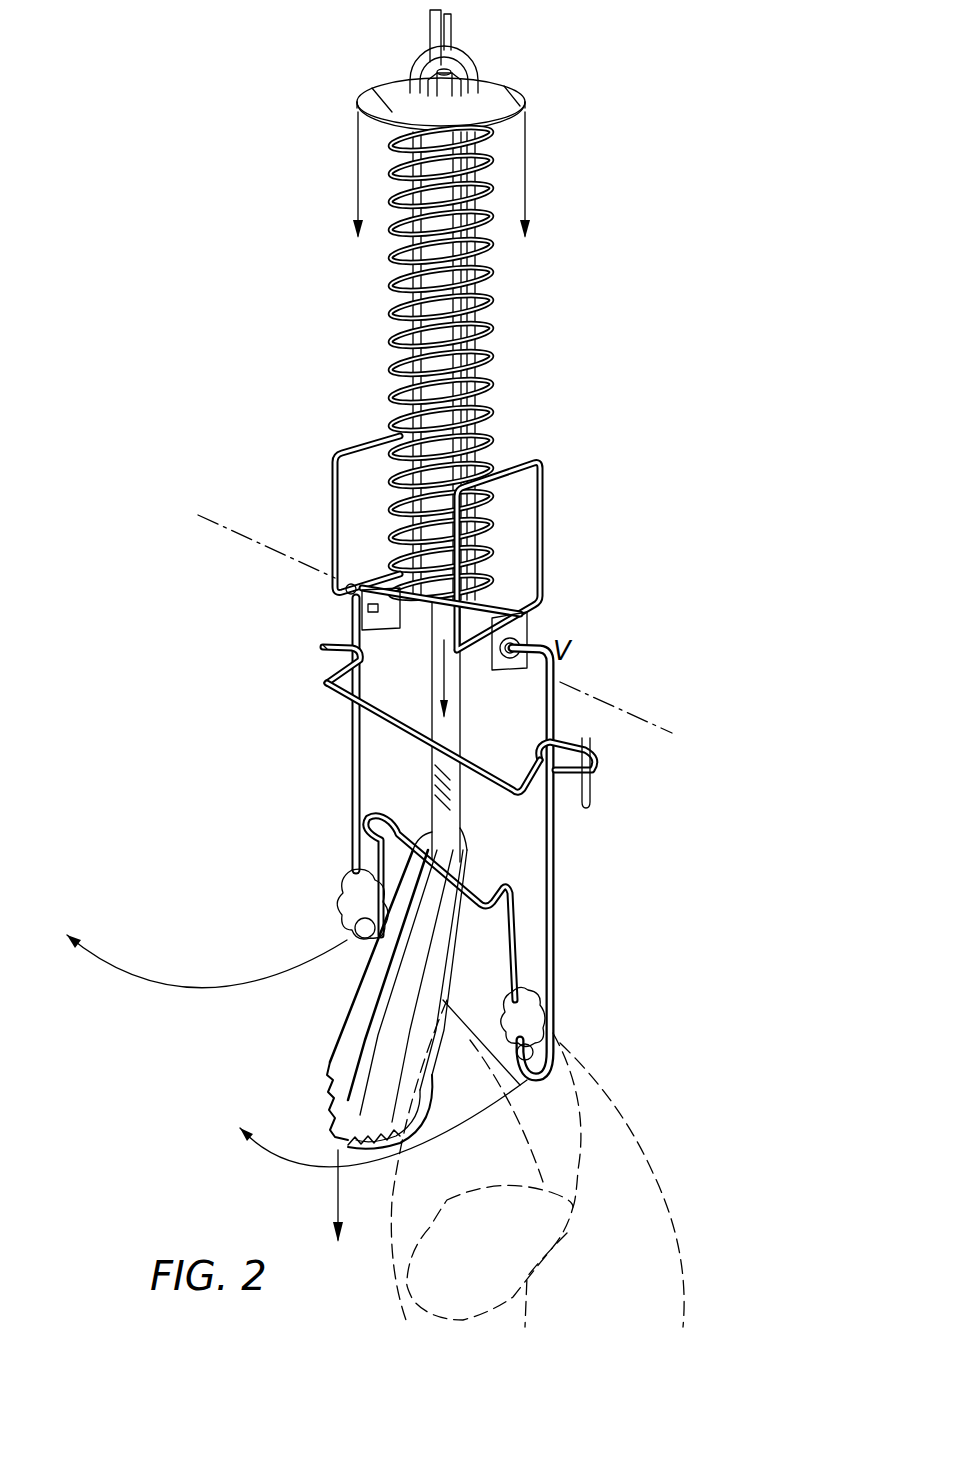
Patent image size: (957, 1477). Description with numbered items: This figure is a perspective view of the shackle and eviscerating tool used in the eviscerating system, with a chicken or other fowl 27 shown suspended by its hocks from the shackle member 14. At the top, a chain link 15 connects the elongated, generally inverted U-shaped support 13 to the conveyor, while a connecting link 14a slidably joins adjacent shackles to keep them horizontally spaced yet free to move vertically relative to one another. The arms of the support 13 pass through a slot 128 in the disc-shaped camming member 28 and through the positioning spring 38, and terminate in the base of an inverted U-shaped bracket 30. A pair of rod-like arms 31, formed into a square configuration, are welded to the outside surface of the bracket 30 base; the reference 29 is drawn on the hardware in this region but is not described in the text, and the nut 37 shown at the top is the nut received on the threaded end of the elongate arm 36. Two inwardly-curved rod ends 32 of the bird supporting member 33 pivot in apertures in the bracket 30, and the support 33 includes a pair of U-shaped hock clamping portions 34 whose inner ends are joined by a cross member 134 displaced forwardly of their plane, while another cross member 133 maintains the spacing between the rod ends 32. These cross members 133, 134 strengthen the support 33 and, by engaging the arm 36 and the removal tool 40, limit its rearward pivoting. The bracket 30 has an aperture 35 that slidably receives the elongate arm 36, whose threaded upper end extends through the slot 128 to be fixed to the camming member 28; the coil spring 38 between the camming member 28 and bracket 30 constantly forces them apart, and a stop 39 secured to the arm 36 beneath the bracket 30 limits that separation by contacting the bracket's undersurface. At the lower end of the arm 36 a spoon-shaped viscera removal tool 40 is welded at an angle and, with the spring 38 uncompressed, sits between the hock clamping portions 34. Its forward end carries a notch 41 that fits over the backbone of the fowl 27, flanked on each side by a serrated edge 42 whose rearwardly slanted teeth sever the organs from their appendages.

The support 13 is at (471, 88).
The shackle member 14 is at (548, 612).
The connecting link 14a is at (322, 648).
The chain link 15 is at (448, 42).
The chicken or other fowl 27 is at (637, 1137).
The camming member 28 is at (502, 96).
The slot 128 is at (520, 104).
The cross bar 29 is at (499, 608).
The bracket 30 is at (374, 612).
The rod-like arms 31 is at (382, 448).
The rod ends 32 is at (354, 585).
The bird supporting member 33 is at (351, 746).
The hock clamping portions 34 is at (357, 942).
The aperture 35 is at (430, 600).
The elongate arm 36 is at (458, 395).
The nut 37 is at (430, 82).
The positioning spring 38 is at (497, 351).
The stop 39 is at (469, 655).
The viscera removal tool 40 is at (434, 1006).
The notch 41 is at (338, 1143).
The serrated edge 42 is at (328, 1109).
The cross member 133 is at (425, 738).
The cross member 134 is at (485, 890).